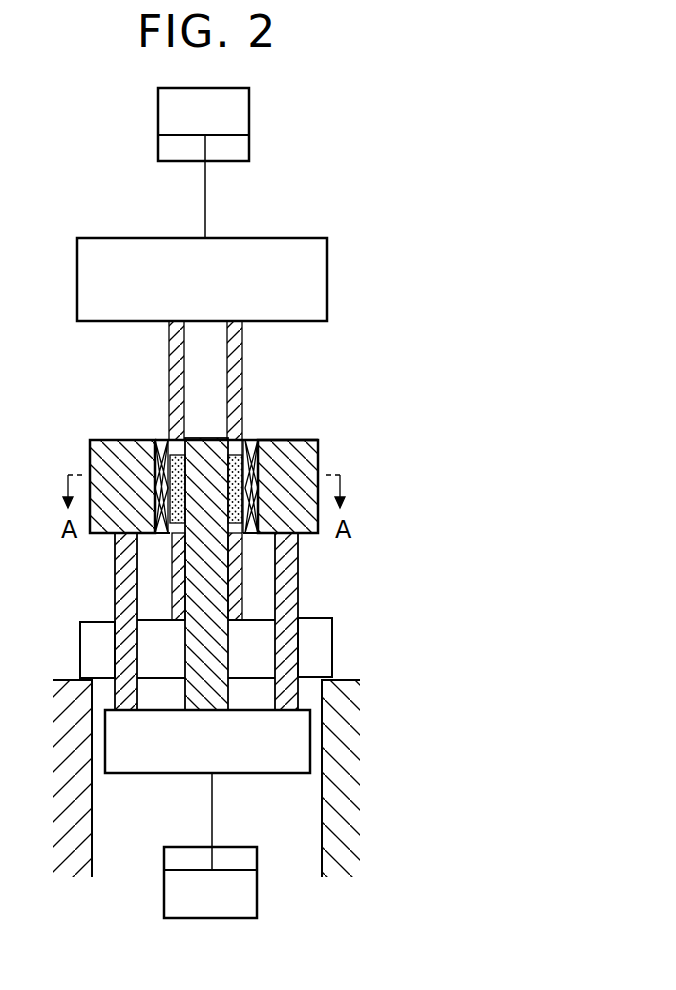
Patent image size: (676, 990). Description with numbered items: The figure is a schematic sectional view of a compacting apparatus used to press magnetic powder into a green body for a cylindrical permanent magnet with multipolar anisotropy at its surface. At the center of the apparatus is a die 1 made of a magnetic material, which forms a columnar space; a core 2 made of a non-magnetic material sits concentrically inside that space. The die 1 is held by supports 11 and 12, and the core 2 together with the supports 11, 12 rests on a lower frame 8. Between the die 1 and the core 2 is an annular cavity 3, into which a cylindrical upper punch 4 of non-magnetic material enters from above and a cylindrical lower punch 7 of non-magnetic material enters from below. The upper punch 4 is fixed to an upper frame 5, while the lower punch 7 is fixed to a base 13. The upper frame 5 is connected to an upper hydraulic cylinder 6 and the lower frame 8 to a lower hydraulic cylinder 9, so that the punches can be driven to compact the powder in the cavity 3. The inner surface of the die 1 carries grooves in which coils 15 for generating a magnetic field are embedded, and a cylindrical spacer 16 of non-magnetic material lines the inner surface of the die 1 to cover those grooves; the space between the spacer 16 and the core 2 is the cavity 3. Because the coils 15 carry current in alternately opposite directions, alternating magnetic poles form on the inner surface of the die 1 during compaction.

The die 1 is at (318, 442).
The core 2 is at (220, 438).
The annular cavity 3 is at (242, 447).
The cylindrical upper punch 4 is at (242, 360).
The upper frame 5 is at (327, 273).
The upper hydraulic cylinder 6 is at (249, 106).
The cylindrical lower punch 7 is at (243, 570).
The lower frame 8 is at (277, 773).
The lower hydraulic cylinder 9 is at (164, 893).
The support 11 is at (114, 655).
The support 12 is at (299, 643).
The base 13 is at (100, 620).
The coils 15 is at (155, 465).
The cylindrical spacer 16 is at (175, 437).